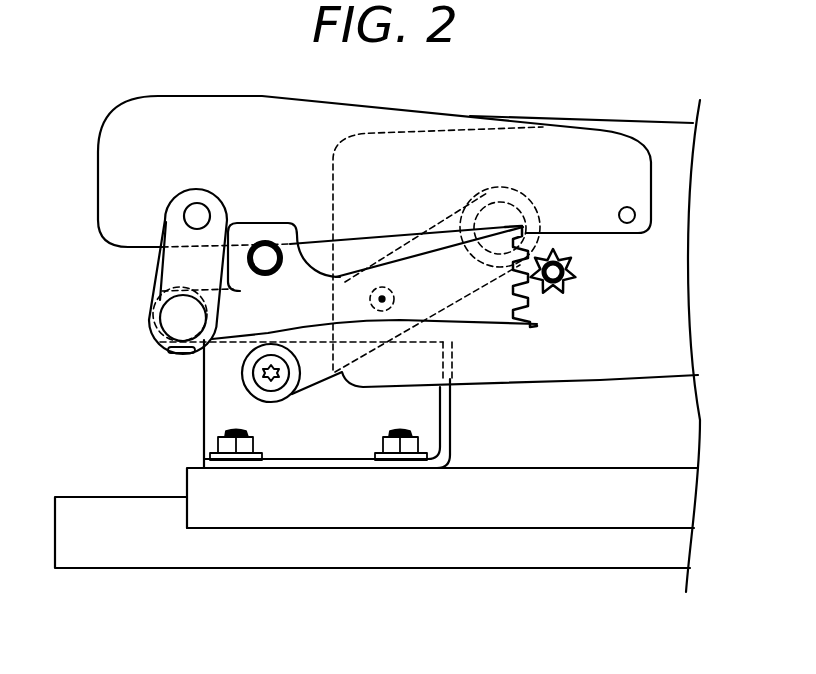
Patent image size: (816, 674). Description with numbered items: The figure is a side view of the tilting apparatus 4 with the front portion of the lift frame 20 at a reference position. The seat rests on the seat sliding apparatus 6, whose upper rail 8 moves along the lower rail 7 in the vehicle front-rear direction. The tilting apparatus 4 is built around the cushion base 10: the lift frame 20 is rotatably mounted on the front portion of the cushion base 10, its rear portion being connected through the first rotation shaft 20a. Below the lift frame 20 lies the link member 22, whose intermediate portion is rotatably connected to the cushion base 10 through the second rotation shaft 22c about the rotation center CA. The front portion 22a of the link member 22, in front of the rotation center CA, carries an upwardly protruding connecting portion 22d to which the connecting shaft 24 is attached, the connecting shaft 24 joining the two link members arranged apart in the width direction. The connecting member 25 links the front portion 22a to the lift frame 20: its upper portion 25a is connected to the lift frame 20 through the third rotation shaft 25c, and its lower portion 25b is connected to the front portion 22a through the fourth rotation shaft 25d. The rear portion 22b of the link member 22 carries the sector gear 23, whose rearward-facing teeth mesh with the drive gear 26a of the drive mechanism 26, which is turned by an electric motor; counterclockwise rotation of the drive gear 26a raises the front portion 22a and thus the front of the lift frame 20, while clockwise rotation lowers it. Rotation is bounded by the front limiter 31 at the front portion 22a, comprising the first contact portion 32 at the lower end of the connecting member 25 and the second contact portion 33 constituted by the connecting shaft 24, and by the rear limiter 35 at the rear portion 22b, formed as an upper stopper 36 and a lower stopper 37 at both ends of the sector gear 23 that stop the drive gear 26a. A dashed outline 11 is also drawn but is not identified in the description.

The tilting apparatus 4 is at (82, 90).
The seat sliding apparatus 6 is at (416, 518).
The lower rail 7 is at (742, 490).
The upper rail 8 is at (678, 503).
The cushion base 10 is at (651, 118).
The operation member 11 is at (463, 195).
The lift frame 20 is at (199, 93).
The first rotation shaft 20a is at (636, 216).
The link member 22 is at (461, 326).
The front portion 22a is at (230, 342).
The rear portion 22b is at (511, 326).
The second rotation shaft 22c is at (393, 297).
The connecting portion 22d is at (243, 225).
The sector gear 23 is at (544, 300).
The connecting shaft 24 is at (285, 220).
The connecting member 25 is at (160, 266).
The upper portion 25a is at (163, 218).
The lower portion 25b is at (150, 323).
The third rotation shaft 25c is at (196, 203).
The fourth rotation shaft 25d is at (165, 350).
The drive mechanism 26 is at (588, 275).
The drive gear 26a is at (571, 253).
The front limiter 31 is at (144, 379).
The first contact portion 32 is at (178, 356).
The second contact portion 33 is at (265, 241).
The rear limiter 35 is at (560, 353).
The upper stopper 36 is at (507, 222).
The lower stopper 37 is at (540, 328).
The rotation center CA is at (382, 296).